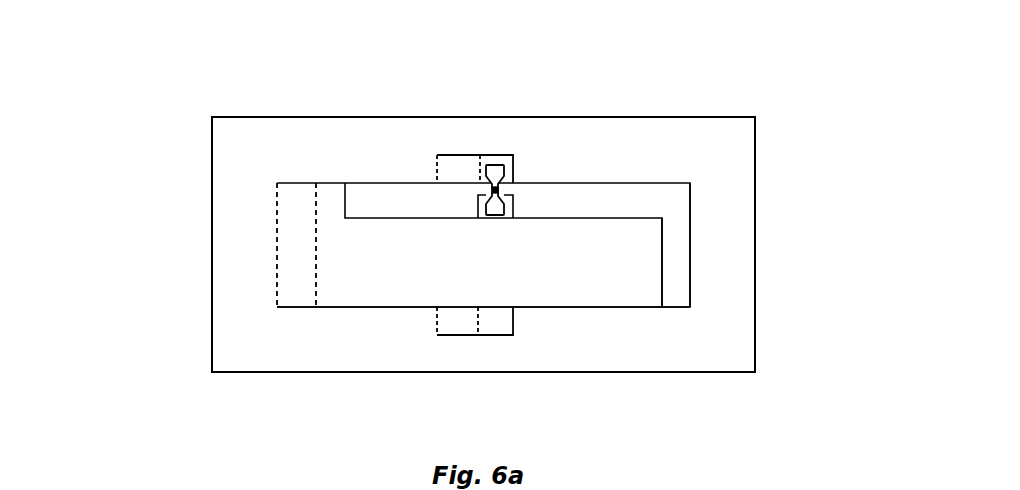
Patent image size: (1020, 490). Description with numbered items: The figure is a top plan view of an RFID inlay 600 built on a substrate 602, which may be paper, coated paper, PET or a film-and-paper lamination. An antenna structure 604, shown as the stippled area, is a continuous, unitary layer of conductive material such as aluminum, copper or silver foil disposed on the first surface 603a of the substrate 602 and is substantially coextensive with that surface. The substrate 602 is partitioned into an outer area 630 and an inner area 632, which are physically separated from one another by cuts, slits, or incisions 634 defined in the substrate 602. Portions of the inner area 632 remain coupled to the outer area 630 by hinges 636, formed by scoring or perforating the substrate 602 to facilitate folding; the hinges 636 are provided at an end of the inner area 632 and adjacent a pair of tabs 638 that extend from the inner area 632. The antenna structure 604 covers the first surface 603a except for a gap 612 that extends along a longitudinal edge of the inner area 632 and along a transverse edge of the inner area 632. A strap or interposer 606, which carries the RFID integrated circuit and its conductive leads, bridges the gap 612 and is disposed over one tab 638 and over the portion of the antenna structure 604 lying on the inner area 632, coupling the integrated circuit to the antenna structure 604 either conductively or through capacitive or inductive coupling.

The RFID inlay 600 is at (115, 34).
The substrate 602 is at (292, 117).
The antenna structure 604 is at (378, 147).
The strap or interposer 606 is at (530, 165).
The outer area 630 is at (628, 138).
The first surface 603a is at (732, 150).
The inner area 632 is at (600, 296).
The gap 612 is at (677, 295).
The cuts, slits, or incisions 634 is at (367, 305).
The hinges 636 is at (458, 162).
The tabs 638 is at (494, 157).